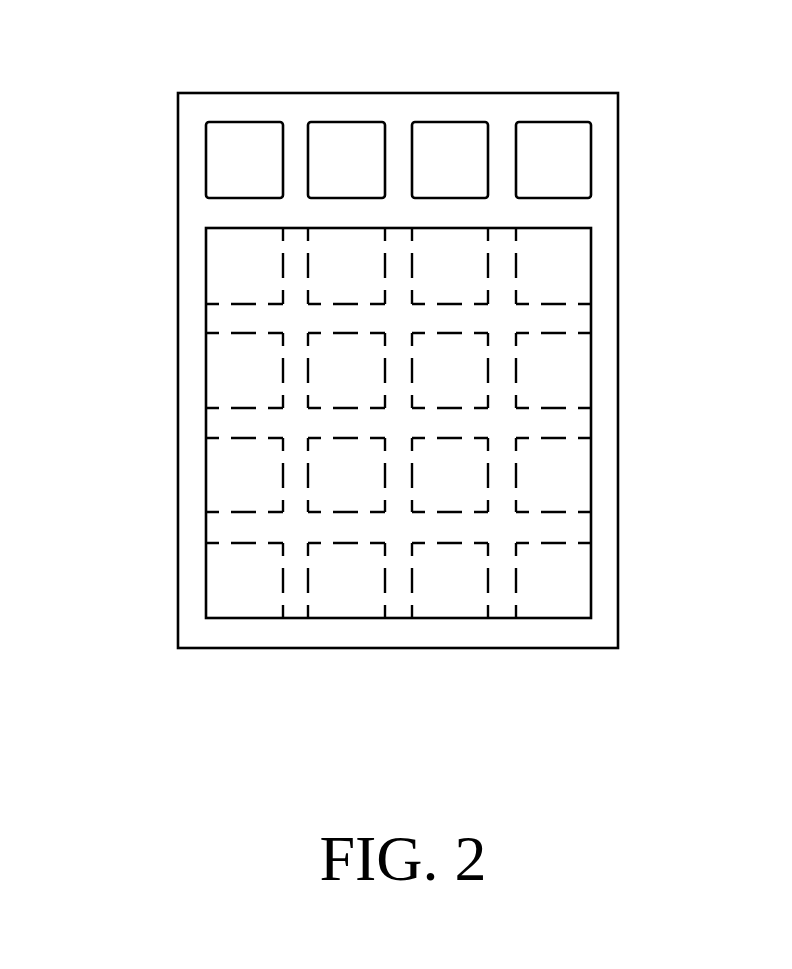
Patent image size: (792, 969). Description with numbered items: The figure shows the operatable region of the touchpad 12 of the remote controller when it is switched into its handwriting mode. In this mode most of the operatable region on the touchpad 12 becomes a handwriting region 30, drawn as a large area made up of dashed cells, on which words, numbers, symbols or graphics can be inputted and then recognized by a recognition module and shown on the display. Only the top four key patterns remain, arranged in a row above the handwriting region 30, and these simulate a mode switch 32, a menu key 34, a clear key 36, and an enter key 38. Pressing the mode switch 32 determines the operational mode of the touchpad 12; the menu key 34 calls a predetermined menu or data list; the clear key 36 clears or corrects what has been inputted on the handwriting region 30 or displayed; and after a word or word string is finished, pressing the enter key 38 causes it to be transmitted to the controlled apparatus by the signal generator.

The touchpad 12 is at (178, 230).
The handwriting region 30 is at (590, 422).
The mode switch 32 is at (240, 122).
The menu key 34 is at (343, 122).
The clear key 36 is at (447, 122).
The enter key 38 is at (550, 122).